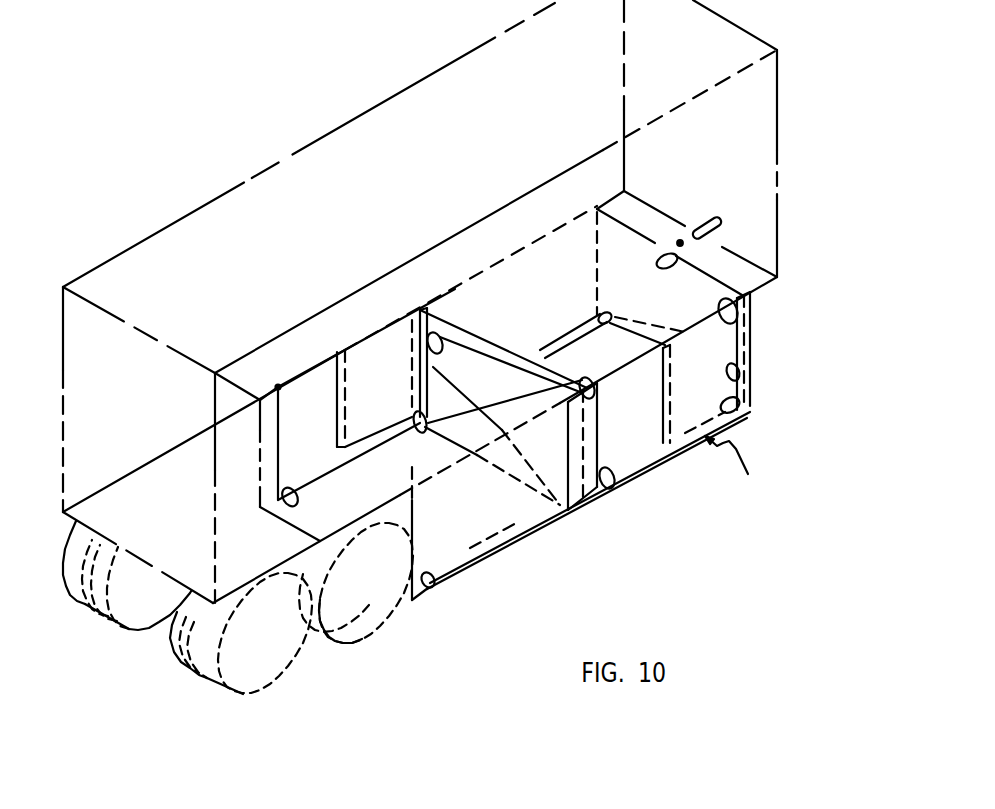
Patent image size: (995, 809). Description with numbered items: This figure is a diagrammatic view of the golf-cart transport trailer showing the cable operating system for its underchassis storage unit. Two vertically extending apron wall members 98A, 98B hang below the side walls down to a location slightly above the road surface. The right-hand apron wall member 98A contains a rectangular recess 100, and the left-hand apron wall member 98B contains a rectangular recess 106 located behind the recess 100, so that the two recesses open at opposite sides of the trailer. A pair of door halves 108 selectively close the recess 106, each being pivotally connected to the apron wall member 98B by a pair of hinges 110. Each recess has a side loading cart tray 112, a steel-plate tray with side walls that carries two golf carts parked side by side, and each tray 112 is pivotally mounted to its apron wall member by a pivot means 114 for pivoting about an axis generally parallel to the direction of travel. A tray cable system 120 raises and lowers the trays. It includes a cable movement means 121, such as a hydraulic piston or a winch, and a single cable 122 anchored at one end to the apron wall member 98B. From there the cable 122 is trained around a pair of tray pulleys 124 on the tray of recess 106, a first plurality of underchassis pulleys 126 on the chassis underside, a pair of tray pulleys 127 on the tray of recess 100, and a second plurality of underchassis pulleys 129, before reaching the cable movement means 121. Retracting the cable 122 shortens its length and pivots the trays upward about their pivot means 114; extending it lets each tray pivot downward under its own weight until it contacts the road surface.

The right-hand apron wall member 98A is at (423, 432).
The left-hand apron wall member 98B is at (257, 420).
The rectangular recess 100 is at (647, 465).
The rectangular recess 106 is at (445, 500).
The door halves 108 is at (373, 353).
The hinges 110 is at (412, 316).
The side loading cart tray 112 is at (458, 521).
The pivot means 114 is at (538, 516).
The tray cable system 120 is at (738, 469).
The cable movement means 121 is at (722, 220).
The cable 122 is at (752, 374).
The tray pulleys 124 is at (435, 583).
The first plurality of underchassis pulleys 126 is at (425, 305).
The tray pulleys 127 is at (745, 409).
The second plurality of underchassis pulleys 129 is at (680, 261).